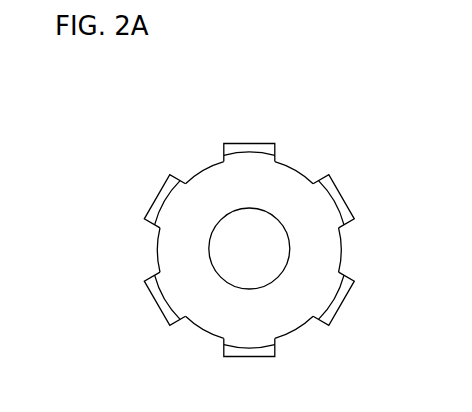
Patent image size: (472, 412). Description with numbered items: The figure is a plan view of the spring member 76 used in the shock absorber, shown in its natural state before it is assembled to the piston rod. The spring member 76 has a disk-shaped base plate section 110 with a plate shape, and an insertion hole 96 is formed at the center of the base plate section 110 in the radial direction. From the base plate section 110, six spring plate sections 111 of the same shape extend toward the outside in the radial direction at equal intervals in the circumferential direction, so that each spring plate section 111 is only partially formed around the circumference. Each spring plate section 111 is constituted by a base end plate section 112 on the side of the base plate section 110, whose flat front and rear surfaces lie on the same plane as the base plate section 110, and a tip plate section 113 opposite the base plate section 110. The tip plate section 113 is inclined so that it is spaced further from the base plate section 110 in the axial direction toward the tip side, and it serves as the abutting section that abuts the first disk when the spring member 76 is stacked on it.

The spring member 76 is at (153, 158).
The insertion hole 96 is at (228, 283).
The base plate section 110 is at (323, 250).
The spring plate section 111 is at (266, 142).
The base end plate section 112 is at (238, 143).
The tip plate section 113 is at (272, 148).